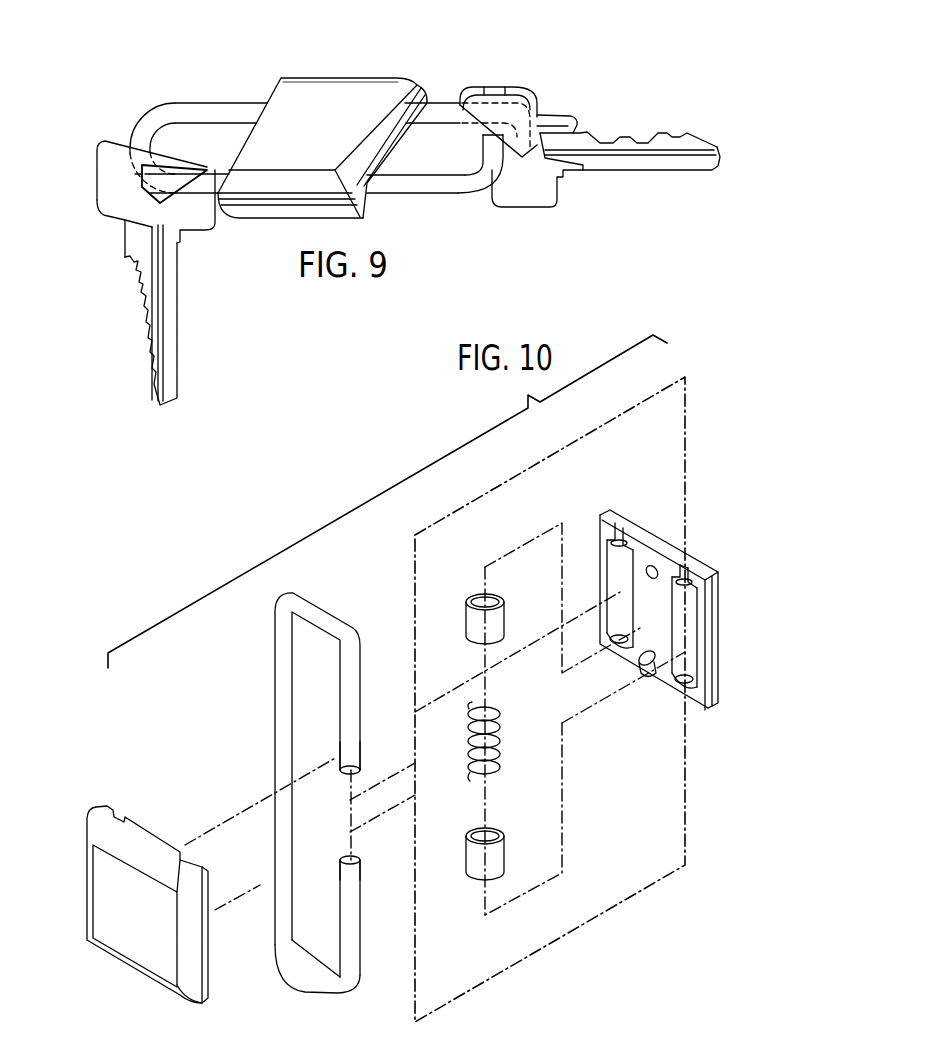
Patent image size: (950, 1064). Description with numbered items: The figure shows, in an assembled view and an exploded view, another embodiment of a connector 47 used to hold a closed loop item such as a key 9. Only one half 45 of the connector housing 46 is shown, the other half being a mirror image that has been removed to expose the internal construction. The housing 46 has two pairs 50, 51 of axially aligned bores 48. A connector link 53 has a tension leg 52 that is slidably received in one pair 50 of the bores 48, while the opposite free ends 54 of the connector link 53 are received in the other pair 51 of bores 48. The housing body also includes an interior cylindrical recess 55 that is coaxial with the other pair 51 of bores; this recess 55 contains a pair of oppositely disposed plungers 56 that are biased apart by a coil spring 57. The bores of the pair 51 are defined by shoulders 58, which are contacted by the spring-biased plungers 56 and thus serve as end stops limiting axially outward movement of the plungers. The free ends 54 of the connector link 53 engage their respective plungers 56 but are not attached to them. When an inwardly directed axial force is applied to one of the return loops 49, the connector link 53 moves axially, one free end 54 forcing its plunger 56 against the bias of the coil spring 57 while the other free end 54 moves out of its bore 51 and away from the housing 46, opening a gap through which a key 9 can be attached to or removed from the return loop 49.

In FIG. 9, the key 9 is at (198, 230).
In FIG. 9, the half of connector housing 45 is at (313, 107).
In FIG. 10, the half of connector housing 45 is at (117, 890).
In FIG. 9, the connector housing 46 is at (292, 86).
In FIG. 9, the connector 47 is at (443, 85).
In FIG. 10, the bores 48 is at (613, 570).
In FIG. 10, the return loop 49 is at (327, 623).
In FIG. 10, the pair of bores 50 is at (623, 530).
In FIG. 10, the pair of bores 51 is at (697, 567).
In FIG. 10, the tension leg 52 is at (295, 802).
In FIG. 9, the connector link 53 is at (450, 188).
In FIG. 10, the free ends 54 is at (354, 735).
In FIG. 10, the interior cylindrical recess 55 is at (690, 627).
In FIG. 10, the plungers 56 is at (463, 635).
In FIG. 10, the coil spring 57 is at (505, 750).
In FIG. 10, the shoulders 58 is at (703, 588).